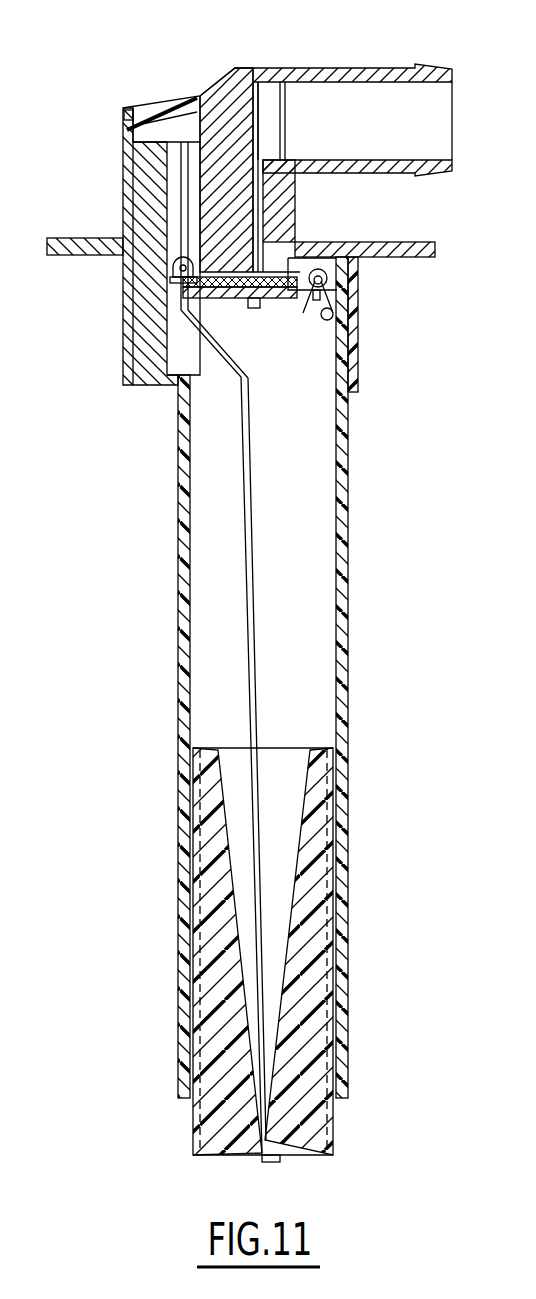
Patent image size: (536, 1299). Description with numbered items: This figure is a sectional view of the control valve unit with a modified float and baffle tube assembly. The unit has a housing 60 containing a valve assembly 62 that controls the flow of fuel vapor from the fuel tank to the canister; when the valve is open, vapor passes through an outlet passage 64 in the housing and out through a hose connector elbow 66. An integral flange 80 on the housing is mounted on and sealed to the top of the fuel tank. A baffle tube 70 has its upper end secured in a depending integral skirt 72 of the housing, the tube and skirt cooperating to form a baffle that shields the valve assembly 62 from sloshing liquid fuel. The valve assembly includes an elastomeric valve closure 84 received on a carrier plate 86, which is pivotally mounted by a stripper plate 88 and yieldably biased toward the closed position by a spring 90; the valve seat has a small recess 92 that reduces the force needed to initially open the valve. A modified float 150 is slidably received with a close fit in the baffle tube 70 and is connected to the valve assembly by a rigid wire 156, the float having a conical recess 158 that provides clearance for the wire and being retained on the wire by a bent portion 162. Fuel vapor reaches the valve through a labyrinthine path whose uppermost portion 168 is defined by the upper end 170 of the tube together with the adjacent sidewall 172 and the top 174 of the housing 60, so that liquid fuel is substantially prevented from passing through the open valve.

The housing 60 is at (185, 83).
The valve assembly 62 is at (266, 338).
The outlet passage 64 is at (278, 214).
The hose connector elbow 66 is at (387, 67).
The baffle tube 70 is at (178, 562).
The depending integral skirt 72 is at (123, 188).
The integral flange 80 is at (420, 243).
The elastomeric valve closure 84 is at (235, 300).
The carrier plate 86 is at (303, 300).
The stripper plate 88 is at (303, 262).
The spring 90 is at (330, 323).
The recess 92 is at (220, 272).
The modified float 150 is at (193, 1128).
The rigid wire 156 is at (247, 549).
The conical recess 158 is at (316, 782).
The bent portion 162 is at (268, 1162).
The uppermost portion 168 is at (153, 125).
The upper end 170 is at (172, 135).
The sidewall 172 is at (133, 115).
The top 174 is at (195, 96).